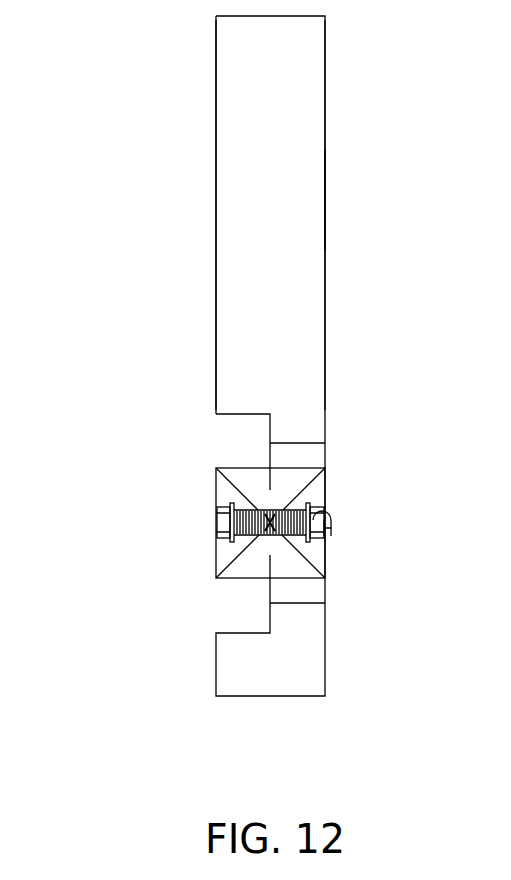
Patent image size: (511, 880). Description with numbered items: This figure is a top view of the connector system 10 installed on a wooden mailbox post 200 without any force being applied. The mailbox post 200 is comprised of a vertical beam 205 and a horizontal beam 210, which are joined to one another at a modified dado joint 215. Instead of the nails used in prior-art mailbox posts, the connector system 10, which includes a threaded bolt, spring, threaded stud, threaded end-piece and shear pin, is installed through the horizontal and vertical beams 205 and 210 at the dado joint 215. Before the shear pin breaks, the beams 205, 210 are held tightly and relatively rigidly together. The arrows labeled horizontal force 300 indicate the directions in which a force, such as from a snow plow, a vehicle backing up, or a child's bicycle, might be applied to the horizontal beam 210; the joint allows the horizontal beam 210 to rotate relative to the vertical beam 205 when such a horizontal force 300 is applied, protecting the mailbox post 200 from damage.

The connector system 10 is at (354, 555).
The mailbox post 200 is at (148, 252).
The vertical beam 205 is at (222, 453).
The horizontal beam 210 is at (345, 196).
The modified dado joint 215 is at (240, 607).
The horizontal force 300 is at (180, 80).